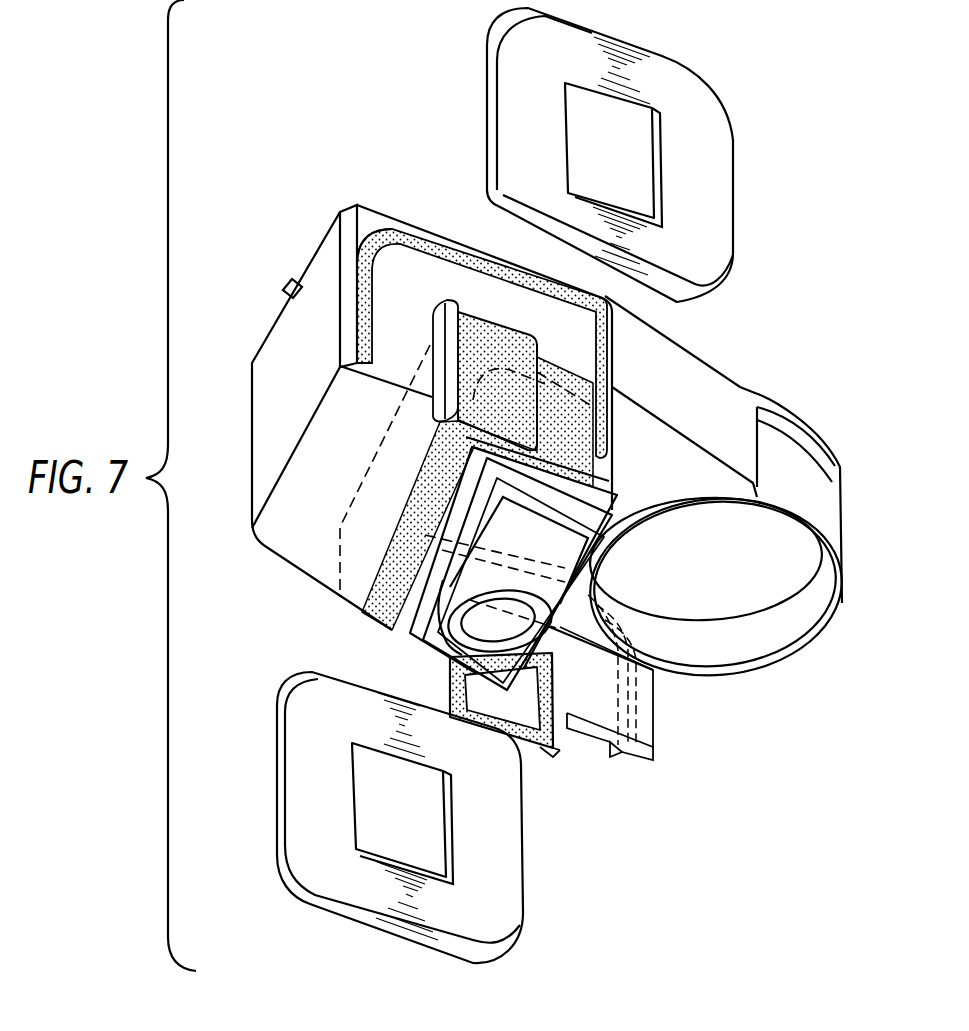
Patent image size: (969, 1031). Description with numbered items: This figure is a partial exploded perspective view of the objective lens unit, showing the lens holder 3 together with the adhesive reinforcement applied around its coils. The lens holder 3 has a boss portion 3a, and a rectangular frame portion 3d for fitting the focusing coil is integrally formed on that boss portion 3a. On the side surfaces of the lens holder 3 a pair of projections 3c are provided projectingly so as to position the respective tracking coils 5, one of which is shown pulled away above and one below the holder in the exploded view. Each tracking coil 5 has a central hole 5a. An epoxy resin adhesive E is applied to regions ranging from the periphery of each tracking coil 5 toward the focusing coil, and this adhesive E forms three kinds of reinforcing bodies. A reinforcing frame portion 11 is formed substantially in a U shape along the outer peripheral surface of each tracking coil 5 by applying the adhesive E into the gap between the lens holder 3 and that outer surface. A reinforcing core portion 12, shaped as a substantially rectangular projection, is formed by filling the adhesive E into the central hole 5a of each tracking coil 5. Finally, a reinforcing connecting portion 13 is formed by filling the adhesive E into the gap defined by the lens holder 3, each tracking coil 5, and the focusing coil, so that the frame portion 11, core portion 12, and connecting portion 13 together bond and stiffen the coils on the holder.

The lens holder 3 is at (328, 248).
The boss portion 3a is at (470, 645).
The projections 3c is at (398, 240).
The rectangular frame portion 3d is at (450, 606).
The tracking coil 5 is at (718, 183).
The central hole 5a is at (563, 153).
The reinforcing frame portion 11 is at (437, 233).
The reinforcing core portion 12 is at (503, 333).
The reinforcing connecting portion 13 is at (425, 500).
The epoxy resin adhesive E is at (383, 232).